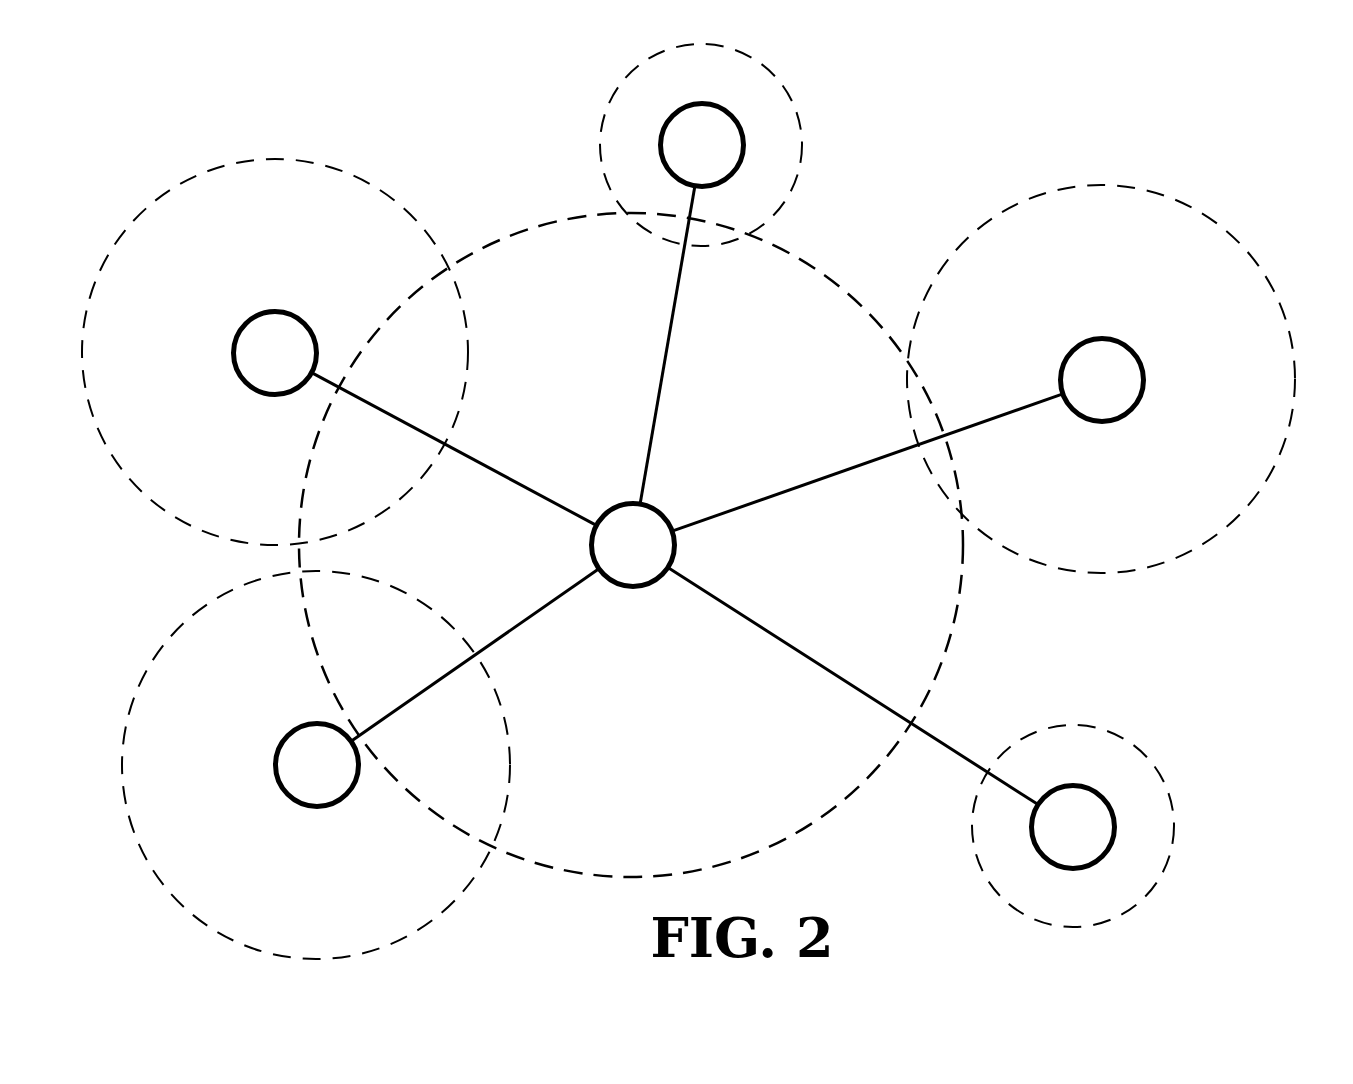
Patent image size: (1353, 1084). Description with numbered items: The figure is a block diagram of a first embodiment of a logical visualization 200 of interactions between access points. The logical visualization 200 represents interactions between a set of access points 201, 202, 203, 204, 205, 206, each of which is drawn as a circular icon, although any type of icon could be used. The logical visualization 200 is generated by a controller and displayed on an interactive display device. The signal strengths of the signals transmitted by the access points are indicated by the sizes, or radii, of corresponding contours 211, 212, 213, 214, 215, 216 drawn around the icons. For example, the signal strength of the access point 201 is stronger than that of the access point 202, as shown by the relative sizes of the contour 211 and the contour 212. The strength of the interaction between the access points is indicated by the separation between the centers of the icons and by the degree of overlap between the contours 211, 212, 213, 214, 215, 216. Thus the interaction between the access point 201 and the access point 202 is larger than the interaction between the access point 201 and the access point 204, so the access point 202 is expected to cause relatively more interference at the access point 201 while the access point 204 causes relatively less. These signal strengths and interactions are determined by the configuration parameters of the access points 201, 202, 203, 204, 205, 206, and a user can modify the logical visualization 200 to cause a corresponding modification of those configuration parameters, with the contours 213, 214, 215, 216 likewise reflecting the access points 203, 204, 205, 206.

The logical visualization 200 is at (1246, 96).
The access point 201 is at (616, 557).
The access point 202 is at (685, 157).
The access point 203 is at (1085, 392).
The access point 204 is at (1056, 839).
The access point 205 is at (300, 777).
The access point 206 is at (258, 365).
The contour 211 is at (826, 272).
The contour 212 is at (803, 137).
The contour 213 is at (1244, 245).
The contour 214 is at (1175, 820).
The contour 215 is at (124, 738).
The contour 216 is at (133, 220).